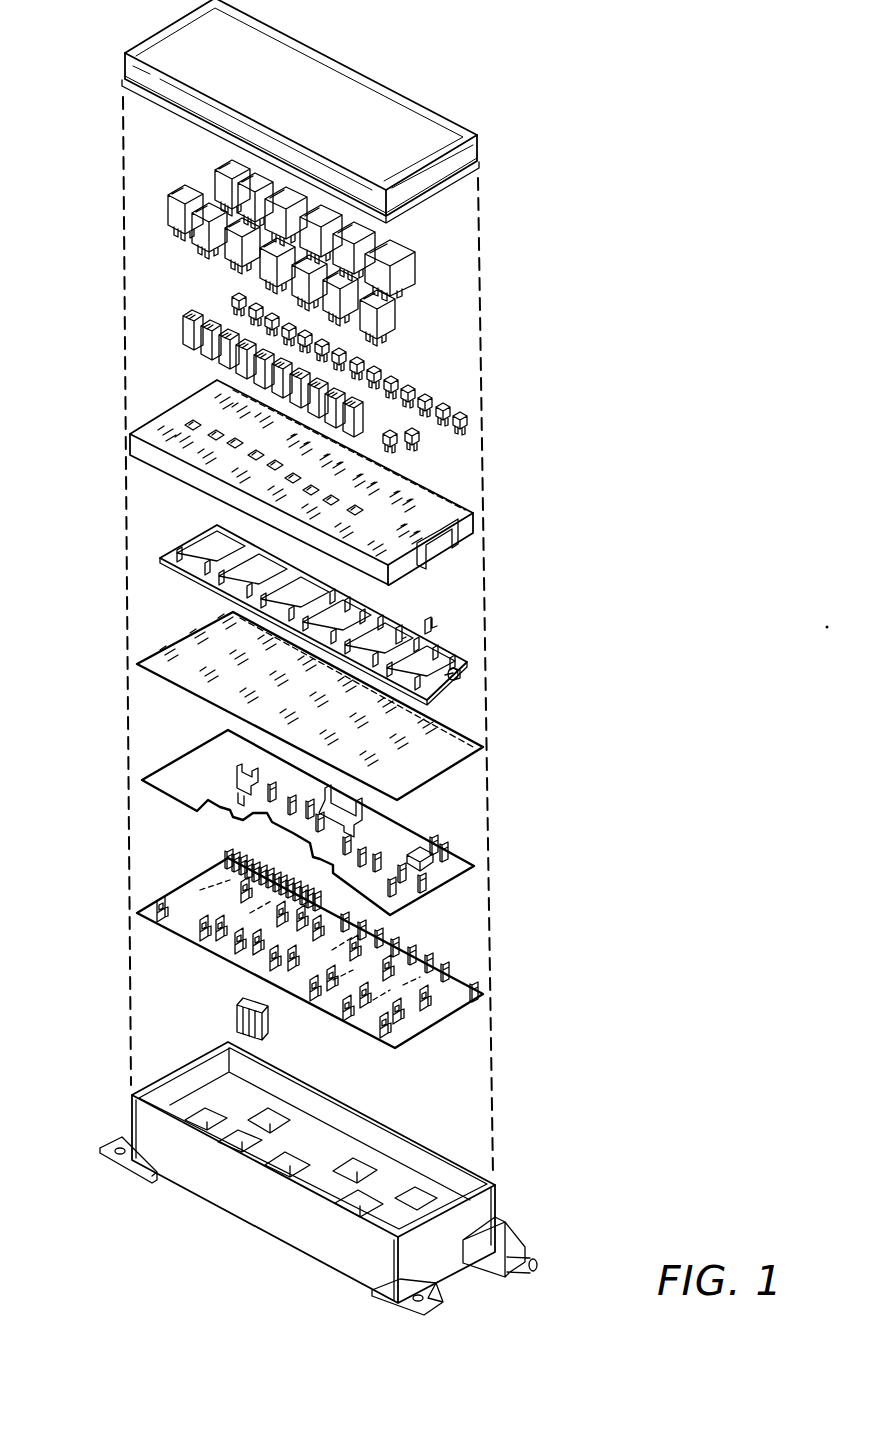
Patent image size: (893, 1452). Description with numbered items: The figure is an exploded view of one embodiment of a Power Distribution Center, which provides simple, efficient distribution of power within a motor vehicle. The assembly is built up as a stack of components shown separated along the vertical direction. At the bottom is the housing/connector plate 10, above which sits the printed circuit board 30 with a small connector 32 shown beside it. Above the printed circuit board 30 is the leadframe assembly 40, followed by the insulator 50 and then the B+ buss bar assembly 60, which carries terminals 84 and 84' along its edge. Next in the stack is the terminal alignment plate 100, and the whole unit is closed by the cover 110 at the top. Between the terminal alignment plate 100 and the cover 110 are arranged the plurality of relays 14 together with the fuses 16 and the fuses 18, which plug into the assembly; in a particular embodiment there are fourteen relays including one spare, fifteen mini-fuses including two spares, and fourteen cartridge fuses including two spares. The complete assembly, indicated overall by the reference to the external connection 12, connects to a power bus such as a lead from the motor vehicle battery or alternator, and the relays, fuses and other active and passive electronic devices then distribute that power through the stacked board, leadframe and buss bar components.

The housing/connector plate 10 is at (478, 1207).
The external connection 12 is at (463, 677).
The relays 14 is at (407, 267).
The fuses 16 is at (183, 313).
The fuses 18 is at (450, 407).
The printed circuit board 30 is at (457, 993).
The connector 32 is at (237, 1027).
The leadframe assembly 40 is at (453, 867).
The insulator 50 is at (457, 755).
The B+ buss bar assembly 60 is at (467, 653).
The terminal 84 is at (443, 629).
The terminal 84' is at (480, 612).
The terminal alignment plate 100 is at (473, 513).
The cover 110 is at (467, 150).